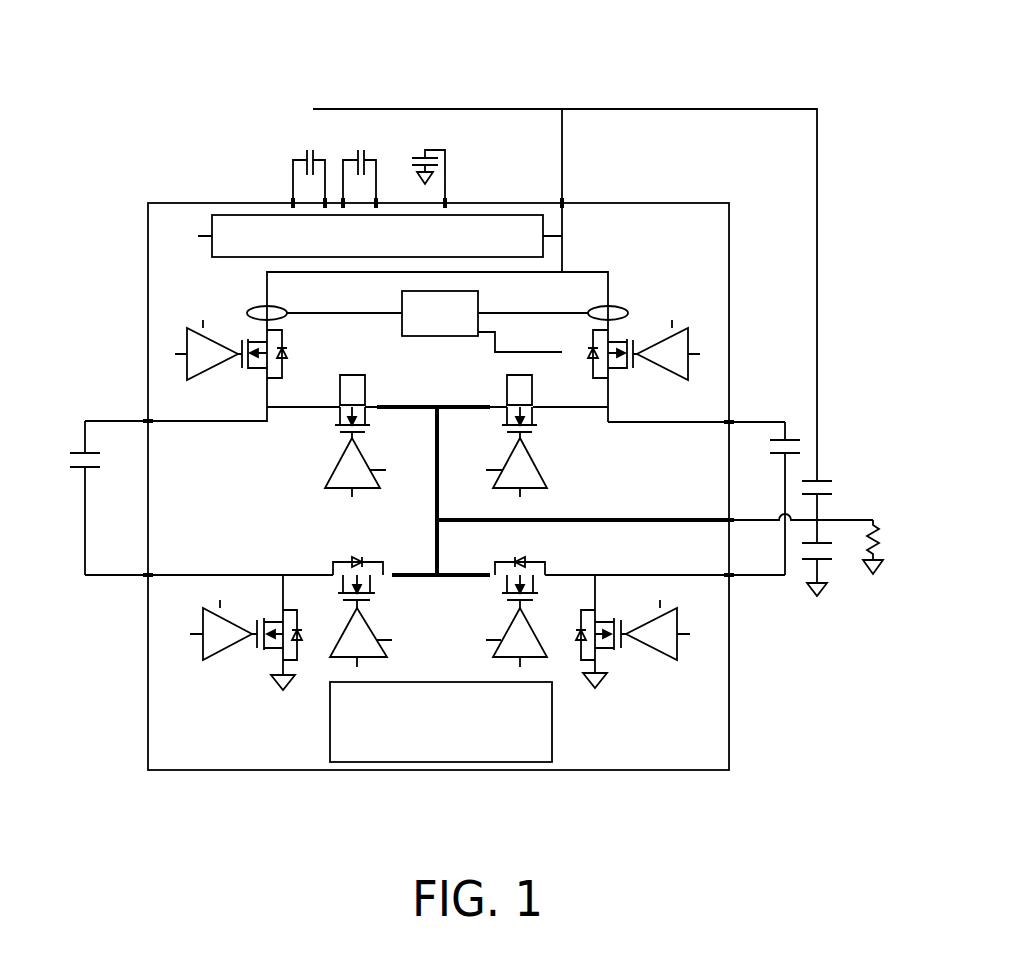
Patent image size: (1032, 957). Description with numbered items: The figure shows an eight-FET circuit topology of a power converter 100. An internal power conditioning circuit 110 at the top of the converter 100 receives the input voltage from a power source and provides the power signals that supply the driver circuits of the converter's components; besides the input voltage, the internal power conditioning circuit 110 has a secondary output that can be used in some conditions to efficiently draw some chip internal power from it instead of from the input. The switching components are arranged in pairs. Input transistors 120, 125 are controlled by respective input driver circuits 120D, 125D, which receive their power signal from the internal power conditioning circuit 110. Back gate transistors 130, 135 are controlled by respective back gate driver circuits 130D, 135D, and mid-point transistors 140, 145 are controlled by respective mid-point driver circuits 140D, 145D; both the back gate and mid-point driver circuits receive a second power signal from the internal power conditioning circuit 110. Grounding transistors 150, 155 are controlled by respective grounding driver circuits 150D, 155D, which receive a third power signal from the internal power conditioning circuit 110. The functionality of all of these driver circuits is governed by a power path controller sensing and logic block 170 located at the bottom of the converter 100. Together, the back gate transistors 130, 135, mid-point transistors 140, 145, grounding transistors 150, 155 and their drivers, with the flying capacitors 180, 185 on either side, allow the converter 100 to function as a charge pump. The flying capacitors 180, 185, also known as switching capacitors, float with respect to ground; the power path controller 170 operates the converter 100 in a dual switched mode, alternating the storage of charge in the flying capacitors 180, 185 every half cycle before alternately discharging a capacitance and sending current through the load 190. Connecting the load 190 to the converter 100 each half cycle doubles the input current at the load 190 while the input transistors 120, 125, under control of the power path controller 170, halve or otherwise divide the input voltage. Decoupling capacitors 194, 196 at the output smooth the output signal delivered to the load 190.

The power converter 100 is at (826, 101).
The internal power conditioning circuit 110 is at (390, 250).
The input transistor 120 is at (282, 351).
The input driver circuit 120D is at (187, 333).
The input transistor 125 is at (595, 362).
The input driver circuit 125D is at (690, 334).
The back gate transistor 130 is at (330, 409).
The back gate driver circuit 130D is at (330, 478).
The back gate transistor 135 is at (541, 408).
The back gate driver circuit 135D is at (541, 476).
The mid-point transistor 140 is at (334, 574).
The mid-point driver circuit 140D is at (330, 648).
The mid-point transistor 145 is at (541, 575).
The mid-point driver circuit 145D is at (548, 648).
The grounding transistor 150 is at (273, 632).
The grounding driver circuit 150D is at (215, 660).
The grounding transistor 155 is at (603, 631).
The grounding driver circuit 155D is at (680, 655).
The power path controller sensing and logic block 170 is at (447, 739).
The flying capacitor 180 is at (75, 452).
The flying capacitor 185 is at (792, 437).
The load 190 is at (892, 547).
The decoupling capacitor 194 is at (822, 480).
The decoupling capacitor 196 is at (832, 560).